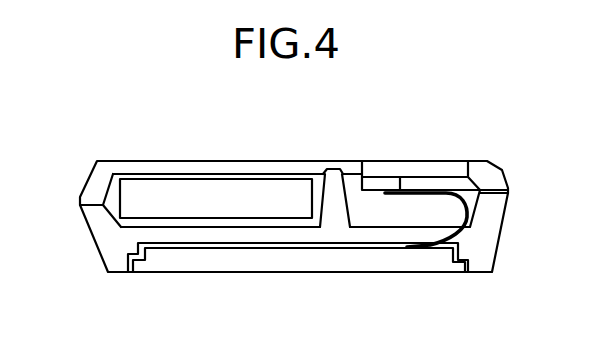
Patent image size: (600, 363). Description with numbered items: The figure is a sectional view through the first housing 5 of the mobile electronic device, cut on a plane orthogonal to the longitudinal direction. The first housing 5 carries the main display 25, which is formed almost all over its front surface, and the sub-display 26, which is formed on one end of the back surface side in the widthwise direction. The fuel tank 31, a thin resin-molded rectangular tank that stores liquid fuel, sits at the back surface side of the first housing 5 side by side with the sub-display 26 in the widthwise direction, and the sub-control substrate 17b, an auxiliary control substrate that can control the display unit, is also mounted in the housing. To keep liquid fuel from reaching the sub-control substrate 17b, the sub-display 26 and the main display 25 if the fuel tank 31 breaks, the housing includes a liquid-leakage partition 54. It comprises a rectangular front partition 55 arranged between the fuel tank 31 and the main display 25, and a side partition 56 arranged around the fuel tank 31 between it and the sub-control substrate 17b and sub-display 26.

The first housing 5 is at (507, 181).
The sub-control substrate 17b is at (372, 190).
The main display 25 is at (161, 273).
The sub-display 26 is at (400, 161).
The fuel tank 31 is at (109, 190).
The liquid-leakage partition 54 is at (240, 220).
The front partition 55 is at (223, 232).
The side partition 56 is at (333, 185).